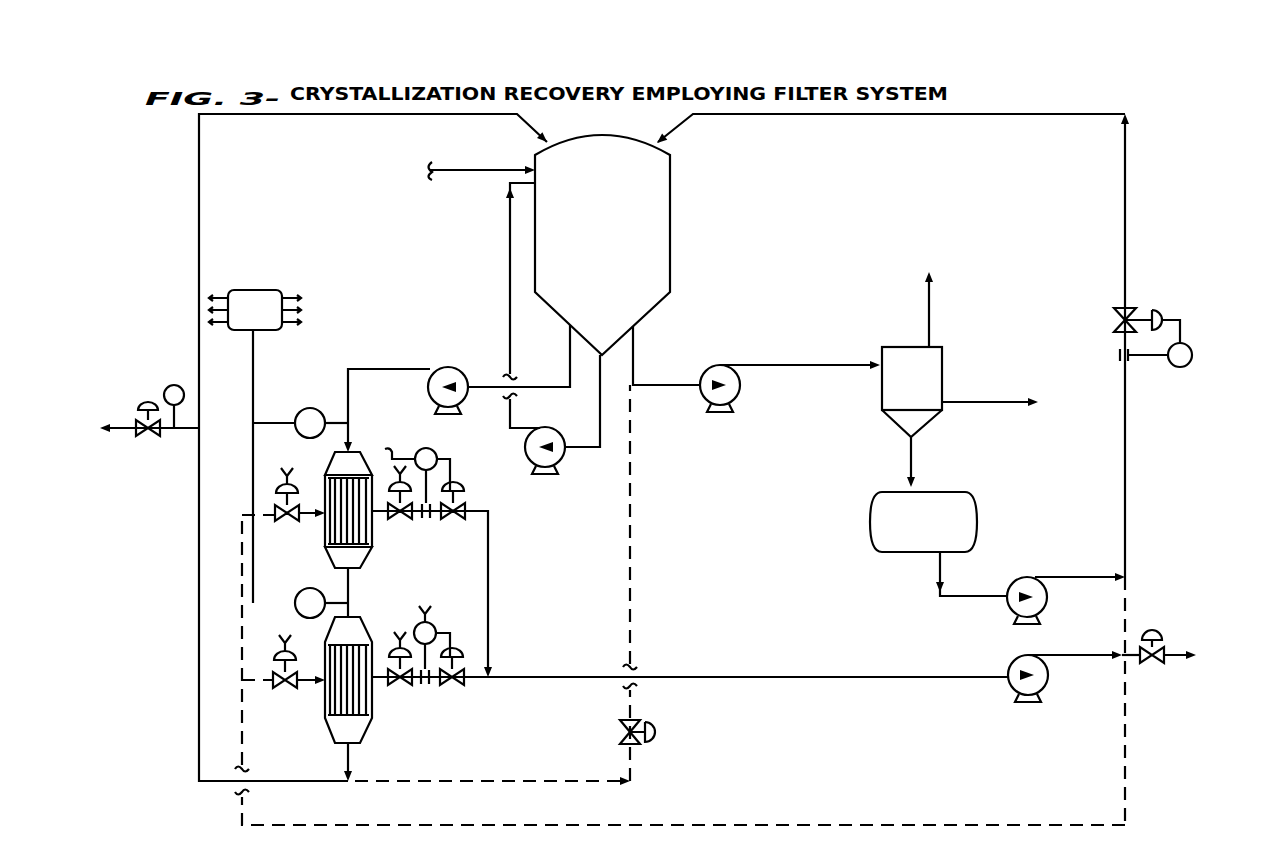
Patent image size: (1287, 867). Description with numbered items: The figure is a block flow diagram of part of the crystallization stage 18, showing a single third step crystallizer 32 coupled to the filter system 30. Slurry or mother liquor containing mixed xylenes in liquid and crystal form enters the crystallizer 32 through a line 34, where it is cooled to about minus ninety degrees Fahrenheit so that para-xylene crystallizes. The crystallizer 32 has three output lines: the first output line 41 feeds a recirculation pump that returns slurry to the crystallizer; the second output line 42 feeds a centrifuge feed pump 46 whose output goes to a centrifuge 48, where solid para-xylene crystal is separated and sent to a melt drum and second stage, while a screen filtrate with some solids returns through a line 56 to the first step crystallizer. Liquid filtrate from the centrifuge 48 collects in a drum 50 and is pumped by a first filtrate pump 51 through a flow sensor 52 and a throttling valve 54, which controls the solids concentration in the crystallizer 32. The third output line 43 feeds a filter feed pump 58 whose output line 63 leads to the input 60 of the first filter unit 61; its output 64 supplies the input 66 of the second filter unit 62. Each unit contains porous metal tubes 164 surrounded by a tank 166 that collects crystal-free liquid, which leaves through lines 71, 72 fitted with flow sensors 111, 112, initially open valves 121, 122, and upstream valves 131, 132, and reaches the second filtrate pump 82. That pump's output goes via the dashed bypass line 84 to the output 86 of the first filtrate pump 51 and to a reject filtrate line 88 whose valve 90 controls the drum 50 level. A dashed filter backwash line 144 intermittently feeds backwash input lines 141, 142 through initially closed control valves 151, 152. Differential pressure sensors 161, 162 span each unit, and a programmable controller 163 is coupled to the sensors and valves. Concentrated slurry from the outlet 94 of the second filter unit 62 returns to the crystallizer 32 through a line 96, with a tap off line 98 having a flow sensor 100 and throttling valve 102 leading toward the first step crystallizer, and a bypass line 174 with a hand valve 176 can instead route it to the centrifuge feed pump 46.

The crystallization stage 18 is at (198, 830).
The filter system 30 is at (528, 598).
The third step crystallizer 32 is at (830, 234).
The line 34 is at (482, 170).
The first output line 41 is at (599, 398).
The second output line 42 is at (633, 372).
The third output line 43 is at (568, 352).
The centrifuge feed pump 46 is at (723, 366).
The centrifuge 48 is at (992, 349).
The drum 50 is at (935, 495).
The first filtrate pump 51 is at (1021, 577).
The flow sensor 52 is at (1180, 367).
The throttling valve 54 is at (1137, 314).
The line 56 is at (995, 404).
The filter feed pump 58 is at (450, 367).
The input 60 is at (350, 443).
The first filter unit 61 is at (363, 461).
The second filter unit 62 is at (325, 718).
The output line 63 is at (378, 371).
The output 64 is at (342, 576).
The input 66 is at (350, 616).
The line 71 is at (490, 548).
The line 72 is at (490, 680).
The second filtrate pump 82 is at (1008, 682).
The bypass line 84 is at (1171, 701).
The output 86 is at (1075, 577).
The reject filtrate line 88 is at (1167, 651).
The valve 90 is at (1135, 658).
The outlet 94 is at (355, 752).
The line 96 is at (199, 701).
The tap off line 98 is at (170, 437).
The flow sensor 100 is at (168, 385).
The throttling valve 102 is at (146, 400).
The flow sensor 111 is at (440, 456).
The flow sensor 112 is at (437, 625).
The valve 121 is at (452, 519).
The valve 122 is at (455, 685).
The valve 131 is at (400, 519).
The valve 132 is at (400, 685).
The backwash input line 141 is at (242, 520).
The backwash input line 142 is at (257, 683).
The filter backwash line 144 is at (680, 670).
The control valve 151 is at (292, 522).
The control valve 152 is at (290, 690).
The differential pressure sensor 161 is at (297, 432).
The differential pressure sensor 162 is at (299, 595).
The programmable controller 163 is at (264, 331).
The porous metal tubes 164 is at (375, 541).
The tank 166 is at (325, 712).
The bypass line 174 is at (496, 585).
The hand valve 176 is at (640, 742).